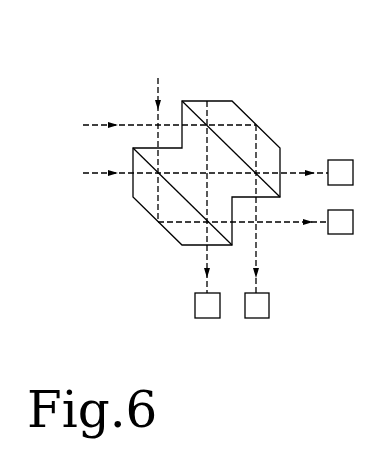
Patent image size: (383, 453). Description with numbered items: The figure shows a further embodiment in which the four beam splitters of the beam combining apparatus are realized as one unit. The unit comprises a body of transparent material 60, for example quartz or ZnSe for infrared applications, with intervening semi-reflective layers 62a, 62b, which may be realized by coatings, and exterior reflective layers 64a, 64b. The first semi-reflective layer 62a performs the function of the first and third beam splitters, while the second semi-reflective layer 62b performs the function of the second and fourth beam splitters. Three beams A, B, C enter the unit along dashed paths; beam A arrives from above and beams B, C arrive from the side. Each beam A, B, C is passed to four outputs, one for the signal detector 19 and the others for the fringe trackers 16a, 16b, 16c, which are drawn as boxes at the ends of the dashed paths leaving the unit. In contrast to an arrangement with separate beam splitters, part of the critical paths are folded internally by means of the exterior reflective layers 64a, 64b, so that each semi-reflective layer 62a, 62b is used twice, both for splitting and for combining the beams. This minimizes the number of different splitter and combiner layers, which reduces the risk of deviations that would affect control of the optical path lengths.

The transparent material 60 is at (218, 162).
The first semi-reflective layer 62a is at (201, 112).
The second semi-reflective layer 62b is at (177, 198).
The exterior reflective layer 64a is at (243, 110).
The exterior reflective layer 64b is at (170, 235).
The fringe tracker 16a is at (255, 318).
The fringe tracker 16b is at (333, 234).
The fringe tracker 16c is at (345, 160).
The signal detector 19 is at (203, 318).
The beam A is at (148, 143).
The beam B is at (158, 121).
The beam C is at (194, 168).